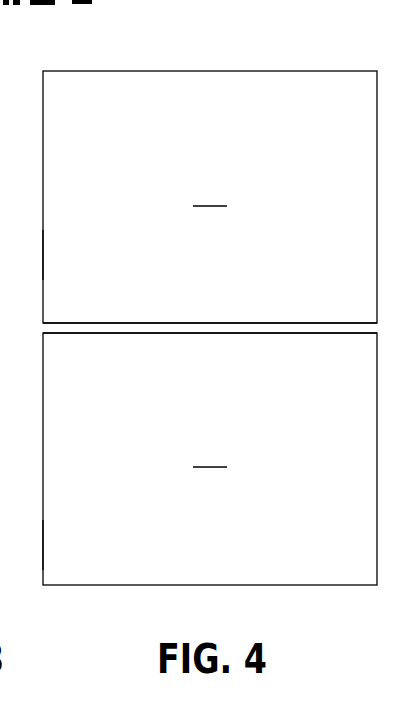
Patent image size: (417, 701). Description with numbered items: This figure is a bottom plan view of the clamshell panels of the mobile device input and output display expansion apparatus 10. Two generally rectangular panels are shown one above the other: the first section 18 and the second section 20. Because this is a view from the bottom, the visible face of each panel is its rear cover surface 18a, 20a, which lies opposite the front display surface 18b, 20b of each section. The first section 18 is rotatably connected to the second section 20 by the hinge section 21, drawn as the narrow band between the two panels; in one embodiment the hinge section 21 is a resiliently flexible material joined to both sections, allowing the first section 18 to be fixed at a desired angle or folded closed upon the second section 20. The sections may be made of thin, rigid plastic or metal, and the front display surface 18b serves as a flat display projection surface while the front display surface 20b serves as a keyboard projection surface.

The mobile device input and output display expansion apparatus 10 is at (189, 296).
The first section 18 is at (57, 189).
The rear cover surface 18a is at (210, 197).
The front display surface 18b is at (22, 255).
The second section 20 is at (57, 392).
The rear cover surface 20a is at (210, 458).
The front display surface 20b is at (22, 545).
The hinge section 21 is at (47, 328).